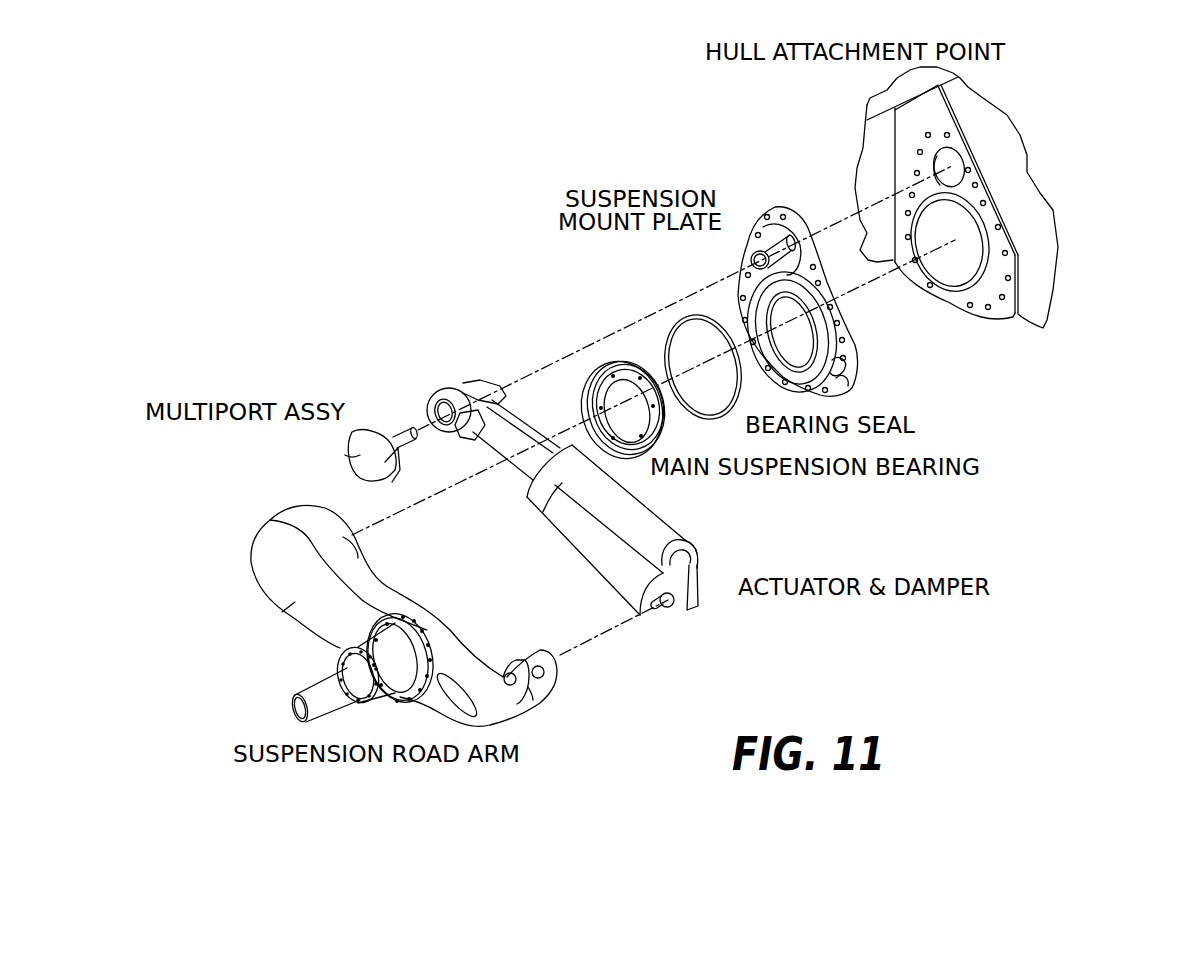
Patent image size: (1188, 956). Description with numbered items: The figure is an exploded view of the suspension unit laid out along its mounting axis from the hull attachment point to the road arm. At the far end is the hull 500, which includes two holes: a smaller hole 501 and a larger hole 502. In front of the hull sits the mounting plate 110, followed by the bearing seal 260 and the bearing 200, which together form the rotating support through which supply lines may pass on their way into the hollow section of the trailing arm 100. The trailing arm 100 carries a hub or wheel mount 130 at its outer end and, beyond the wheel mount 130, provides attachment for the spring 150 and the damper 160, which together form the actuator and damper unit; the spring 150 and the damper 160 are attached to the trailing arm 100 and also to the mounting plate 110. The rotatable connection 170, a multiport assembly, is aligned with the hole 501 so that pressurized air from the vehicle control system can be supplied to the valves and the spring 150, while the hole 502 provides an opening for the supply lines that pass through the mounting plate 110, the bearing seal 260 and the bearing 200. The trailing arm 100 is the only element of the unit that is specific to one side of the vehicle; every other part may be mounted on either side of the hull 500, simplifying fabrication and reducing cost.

The trailing arm 100 is at (278, 612).
The hub or wheel mount 130 is at (345, 650).
The rotatable connection (multiport assembly) 170 is at (353, 458).
The damper 160 is at (655, 533).
The spring 150 is at (683, 610).
The bearing 200 is at (592, 387).
The bearing seal 260 is at (670, 335).
The mounting plate 110 is at (847, 345).
The hull 500 is at (1017, 195).
The hole 501 is at (951, 166).
The hole 502 is at (958, 239).